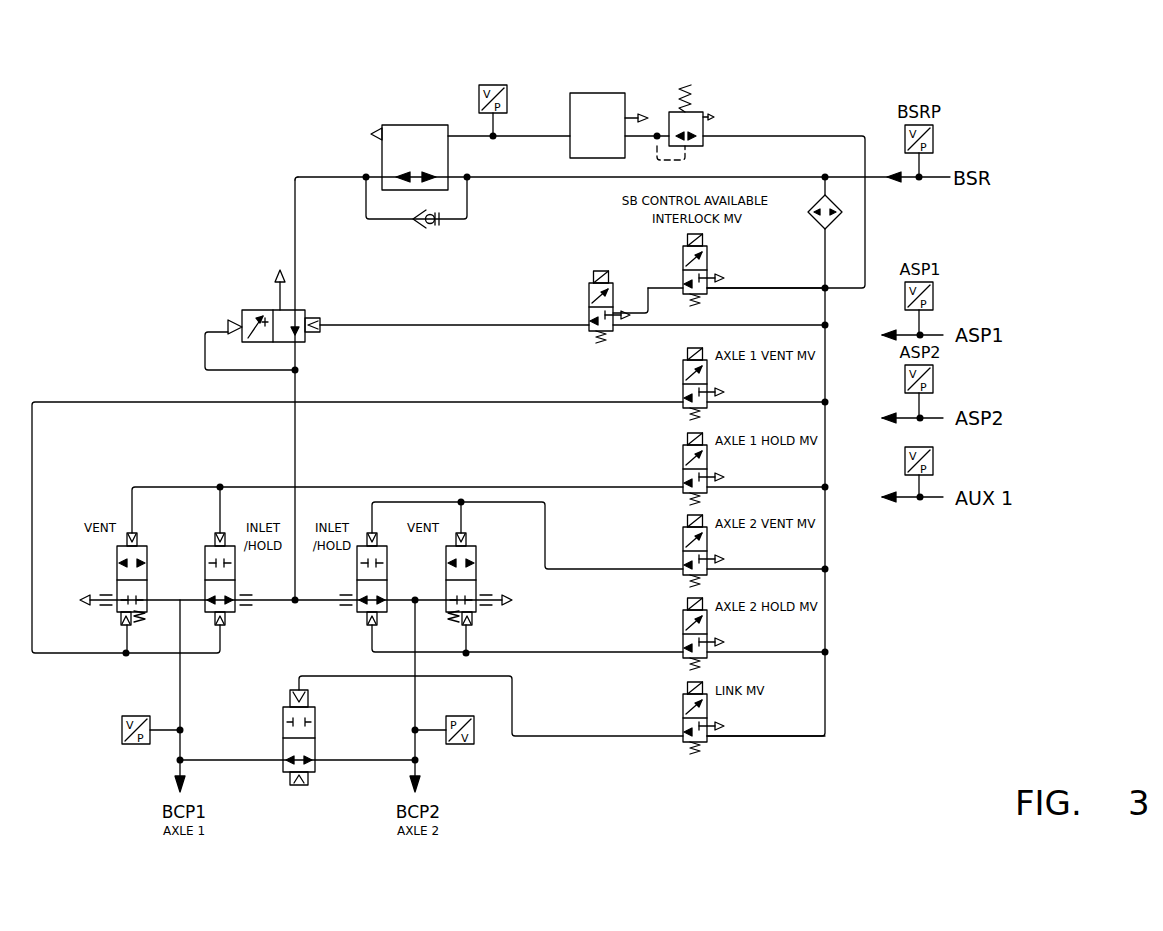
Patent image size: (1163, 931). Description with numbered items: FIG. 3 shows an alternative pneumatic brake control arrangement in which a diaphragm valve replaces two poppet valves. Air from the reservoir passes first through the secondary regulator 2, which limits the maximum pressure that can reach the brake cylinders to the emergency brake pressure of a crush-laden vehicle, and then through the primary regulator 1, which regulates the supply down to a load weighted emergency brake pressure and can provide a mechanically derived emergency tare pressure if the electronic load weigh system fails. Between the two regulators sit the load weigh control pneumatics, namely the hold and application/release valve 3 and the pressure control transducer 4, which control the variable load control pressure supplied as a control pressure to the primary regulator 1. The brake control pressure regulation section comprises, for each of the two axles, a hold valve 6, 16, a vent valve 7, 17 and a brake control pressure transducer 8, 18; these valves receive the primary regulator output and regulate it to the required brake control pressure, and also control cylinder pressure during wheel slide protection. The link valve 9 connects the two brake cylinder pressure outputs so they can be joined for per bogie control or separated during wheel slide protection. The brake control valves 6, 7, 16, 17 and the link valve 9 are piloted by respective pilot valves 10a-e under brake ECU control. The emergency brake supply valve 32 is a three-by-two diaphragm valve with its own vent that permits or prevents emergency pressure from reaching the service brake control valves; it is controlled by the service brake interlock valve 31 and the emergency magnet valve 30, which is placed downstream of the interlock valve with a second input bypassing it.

The primary regulator 1 is at (417, 125).
The secondary regulator 2 is at (690, 88).
The hold & application/release valve 3 is at (597, 47).
The pressure control transducer 4 is at (493, 55).
The hold valve 6 is at (205, 560).
The vent valve 7 is at (117, 562).
The brake control pressure control transducer 8 is at (122, 730).
The link valve 9 is at (315, 722).
The hold valve 16 is at (477, 552).
The vent valve 17 is at (371, 533).
The brake control pressure control transducer 18 is at (452, 745).
The emergency magnet valve 30 is at (589, 298).
The service brake interlock valve 31 is at (707, 251).
The emergency brake supply valve 32 is at (228, 327).
The pilot valves 10a-e is at (716, 752).